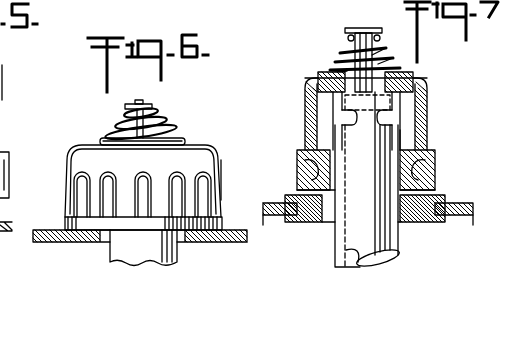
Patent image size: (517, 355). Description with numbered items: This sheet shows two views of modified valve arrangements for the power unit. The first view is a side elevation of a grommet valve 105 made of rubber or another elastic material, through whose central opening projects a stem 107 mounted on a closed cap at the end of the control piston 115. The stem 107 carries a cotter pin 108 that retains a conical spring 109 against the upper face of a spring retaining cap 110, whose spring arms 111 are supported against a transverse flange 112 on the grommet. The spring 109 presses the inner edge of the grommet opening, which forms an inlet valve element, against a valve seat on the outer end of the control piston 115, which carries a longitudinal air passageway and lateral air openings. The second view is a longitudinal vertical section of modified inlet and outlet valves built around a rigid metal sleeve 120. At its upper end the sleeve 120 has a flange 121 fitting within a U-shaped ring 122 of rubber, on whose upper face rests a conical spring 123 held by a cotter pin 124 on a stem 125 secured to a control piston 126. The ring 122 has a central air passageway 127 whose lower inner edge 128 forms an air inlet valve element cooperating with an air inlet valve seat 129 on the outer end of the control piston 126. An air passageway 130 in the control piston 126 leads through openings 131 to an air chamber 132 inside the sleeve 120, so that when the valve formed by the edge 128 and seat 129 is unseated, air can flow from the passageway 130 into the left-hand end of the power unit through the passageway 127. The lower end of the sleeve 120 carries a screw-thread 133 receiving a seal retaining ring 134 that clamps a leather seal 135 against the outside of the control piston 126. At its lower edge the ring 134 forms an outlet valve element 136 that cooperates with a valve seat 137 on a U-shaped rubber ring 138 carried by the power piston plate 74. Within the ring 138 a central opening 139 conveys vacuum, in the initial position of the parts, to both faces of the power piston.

In FIG. 6, the power piston plate 74 is at (88, 243).
In FIG. 7, the power piston plate 74 is at (462, 201).
In FIG. 6, the grommet valve 105 is at (199, 191).
In FIG. 6, the stem 107 is at (147, 102).
In FIG. 6, the cotter pin 108 is at (156, 106).
In FIG. 6, the conical spring 109 is at (168, 120).
In FIG. 6, the spring retaining cap 110 is at (80, 152).
In FIG. 6, the spring arms 111 is at (158, 188).
In FIG. 6, the transverse flange 112 is at (63, 224).
In FIG. 6, the control piston 115 is at (154, 254).
In FIG. 7, the sleeve 120 is at (428, 100).
In FIG. 7, the flange 121 is at (318, 88).
In FIG. 7, the U-shaped ring 122 is at (320, 75).
In FIG. 7, the conical spring 123 is at (342, 50).
In FIG. 7, the cotter pin 124 is at (363, 29).
In FIG. 7, the stem 125 is at (380, 45).
In FIG. 7, the control piston 126 is at (398, 247).
In FIG. 7, the central air passageway 127 is at (347, 70).
In FIG. 7, the lower inner edge 128 is at (383, 94).
In FIG. 7, the air inlet valve seat 129 is at (333, 104).
In FIG. 7, the air passageway 130 is at (356, 270).
In FIG. 7, the openings 131 is at (395, 118).
In FIG. 7, the air chamber 132 is at (418, 140).
In FIG. 7, the screw-thread 133 is at (430, 166).
In FIG. 7, the seal retaining ring 134 is at (432, 153).
In FIG. 7, the leather seal 135 is at (303, 152).
In FIG. 7, the outlet valve element 136 is at (302, 170).
In FIG. 7, the valve seat 137 is at (296, 188).
In FIG. 7, the U-shaped ring 138 is at (305, 223).
In FIG. 7, the central opening 139 is at (327, 224).